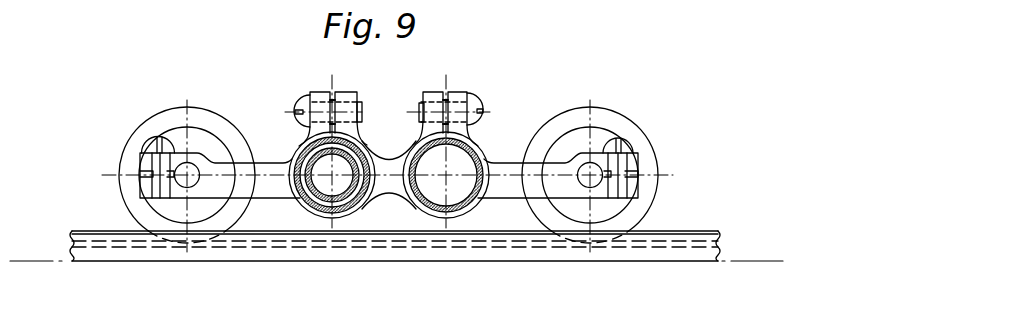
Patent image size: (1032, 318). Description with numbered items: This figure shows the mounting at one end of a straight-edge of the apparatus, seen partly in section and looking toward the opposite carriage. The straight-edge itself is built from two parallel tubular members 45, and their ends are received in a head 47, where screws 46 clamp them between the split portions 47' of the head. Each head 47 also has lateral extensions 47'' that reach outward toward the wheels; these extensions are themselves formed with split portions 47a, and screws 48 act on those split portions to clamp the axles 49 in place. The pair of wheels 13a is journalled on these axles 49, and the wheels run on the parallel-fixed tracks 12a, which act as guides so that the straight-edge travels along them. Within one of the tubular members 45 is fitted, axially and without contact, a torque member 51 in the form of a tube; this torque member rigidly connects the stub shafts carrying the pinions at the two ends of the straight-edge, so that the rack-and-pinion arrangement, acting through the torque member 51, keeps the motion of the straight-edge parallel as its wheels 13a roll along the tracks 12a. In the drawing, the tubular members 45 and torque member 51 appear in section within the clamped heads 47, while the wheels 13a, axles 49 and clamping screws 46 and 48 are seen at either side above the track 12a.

The parallel-fixed tracks 12a is at (260, 262).
The wheels 13a is at (123, 149).
The tubular members 45 is at (473, 159).
The screws 46 is at (303, 98).
The heads 47 is at (448, 180).
The split portions of heads 47' is at (389, 119).
The lateral extensions 47'' is at (235, 165).
The split portions of lateral extensions 47a is at (140, 183).
The screws 48 is at (160, 134).
The axles 49 is at (195, 163).
The torque member 51 is at (307, 203).